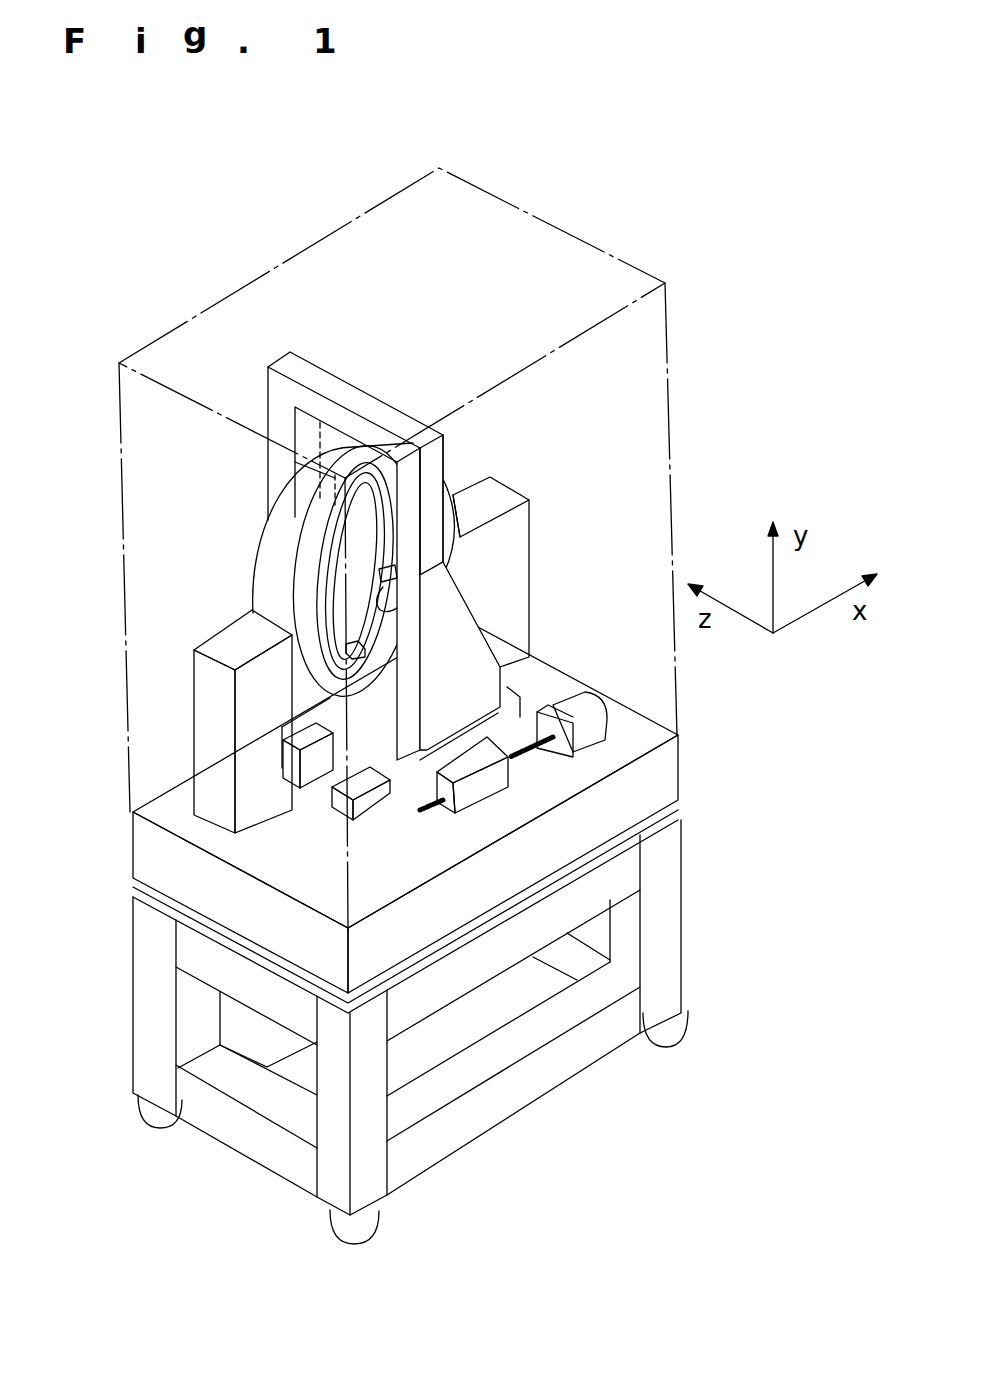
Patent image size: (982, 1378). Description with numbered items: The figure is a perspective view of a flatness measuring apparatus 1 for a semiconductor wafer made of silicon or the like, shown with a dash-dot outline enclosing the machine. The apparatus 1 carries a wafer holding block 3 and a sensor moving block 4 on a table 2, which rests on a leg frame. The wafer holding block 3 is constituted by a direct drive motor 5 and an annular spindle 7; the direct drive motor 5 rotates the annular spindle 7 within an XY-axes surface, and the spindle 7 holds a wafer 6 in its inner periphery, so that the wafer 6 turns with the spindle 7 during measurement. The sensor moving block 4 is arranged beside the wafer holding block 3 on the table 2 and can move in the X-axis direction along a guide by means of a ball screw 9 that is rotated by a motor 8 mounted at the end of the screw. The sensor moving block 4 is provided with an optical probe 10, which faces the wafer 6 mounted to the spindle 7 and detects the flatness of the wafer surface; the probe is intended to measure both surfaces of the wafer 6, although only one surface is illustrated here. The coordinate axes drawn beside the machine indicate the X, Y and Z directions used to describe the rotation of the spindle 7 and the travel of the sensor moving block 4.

The flatness measuring apparatus 1 is at (212, 252).
The table 2 is at (680, 757).
The wafer holding block 3 is at (541, 586).
The sensor moving block 4 is at (472, 580).
The direct drive motor 5 is at (270, 585).
The wafer 6 is at (388, 530).
The annular spindle 7 is at (362, 485).
The motor 8 is at (590, 713).
The ball screw 9 is at (520, 757).
The optical probe 10 is at (397, 613).